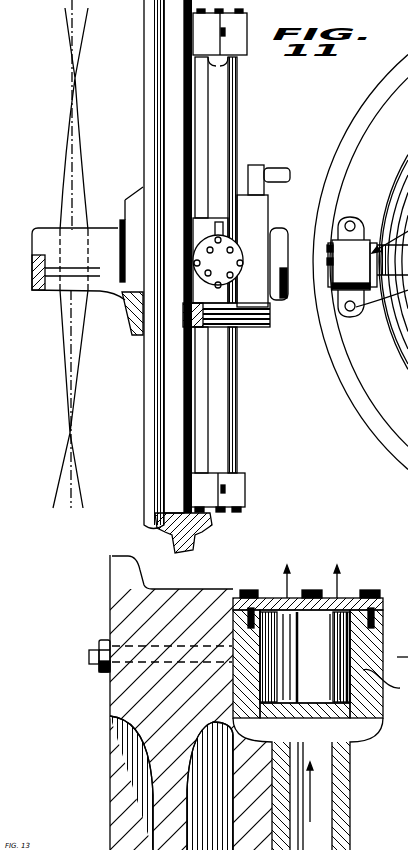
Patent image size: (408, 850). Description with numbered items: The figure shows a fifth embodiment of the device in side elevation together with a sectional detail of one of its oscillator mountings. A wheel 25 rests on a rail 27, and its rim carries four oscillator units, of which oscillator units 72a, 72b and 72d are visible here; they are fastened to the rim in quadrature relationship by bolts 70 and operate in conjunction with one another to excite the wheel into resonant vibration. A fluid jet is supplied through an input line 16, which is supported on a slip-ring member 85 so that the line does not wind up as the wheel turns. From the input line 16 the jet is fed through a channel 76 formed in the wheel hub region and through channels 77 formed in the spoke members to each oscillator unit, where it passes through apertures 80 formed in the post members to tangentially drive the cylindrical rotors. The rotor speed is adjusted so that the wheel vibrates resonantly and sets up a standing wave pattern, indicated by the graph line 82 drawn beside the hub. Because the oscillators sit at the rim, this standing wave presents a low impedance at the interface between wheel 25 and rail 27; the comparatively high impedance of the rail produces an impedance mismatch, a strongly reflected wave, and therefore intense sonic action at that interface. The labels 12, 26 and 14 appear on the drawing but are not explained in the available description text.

In FIG. 11, the section line 12- 12 is at (333, 13).
In FIG. 11, the input line 16 is at (257, 198).
In FIG. 11, the wheel 25 is at (167, 490).
In FIG. 11, the propeller hub 26 is at (100, 237).
In FIG. 11, the rail 27 is at (203, 523).
In FIG. 13, the bolts 70 is at (92, 670).
In FIG. 11, the oscillator unit 72a is at (245, 298).
In FIG. 11, the oscillator unit 72b is at (248, 60).
In FIG. 11, the oscillator unit 72d is at (249, 468).
In FIG. 13, the channel 76 is at (373, 582).
In FIG. 13, the channels 77 is at (333, 848).
In FIG. 13, the apertures 80 is at (279, 657).
In FIG. 11, the graph line 82 is at (77, 396).
In FIG. 11, the slip-ring member 85 is at (266, 208).
In FIG. 13, the hub width dimension 14 is at (82, 652).